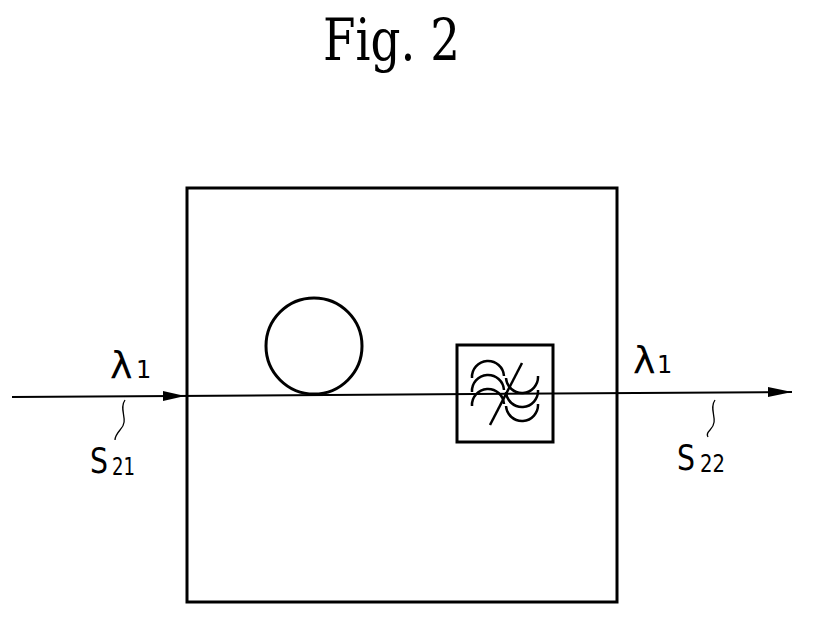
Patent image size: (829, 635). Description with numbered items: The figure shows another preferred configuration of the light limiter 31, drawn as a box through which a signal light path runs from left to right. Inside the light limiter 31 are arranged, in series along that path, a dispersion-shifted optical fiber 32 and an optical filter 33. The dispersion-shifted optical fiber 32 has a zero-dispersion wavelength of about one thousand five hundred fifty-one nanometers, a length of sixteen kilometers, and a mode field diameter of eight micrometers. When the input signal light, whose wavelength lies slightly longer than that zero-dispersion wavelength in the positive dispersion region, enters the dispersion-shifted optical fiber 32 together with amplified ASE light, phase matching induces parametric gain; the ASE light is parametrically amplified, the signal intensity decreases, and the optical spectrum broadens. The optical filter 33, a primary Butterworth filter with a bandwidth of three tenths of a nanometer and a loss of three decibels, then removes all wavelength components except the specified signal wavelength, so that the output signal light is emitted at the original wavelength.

The light limiter 31 is at (500, 188).
The dispersion-shifted optical fiber 32 is at (318, 297).
The optical filter 33 is at (500, 345).